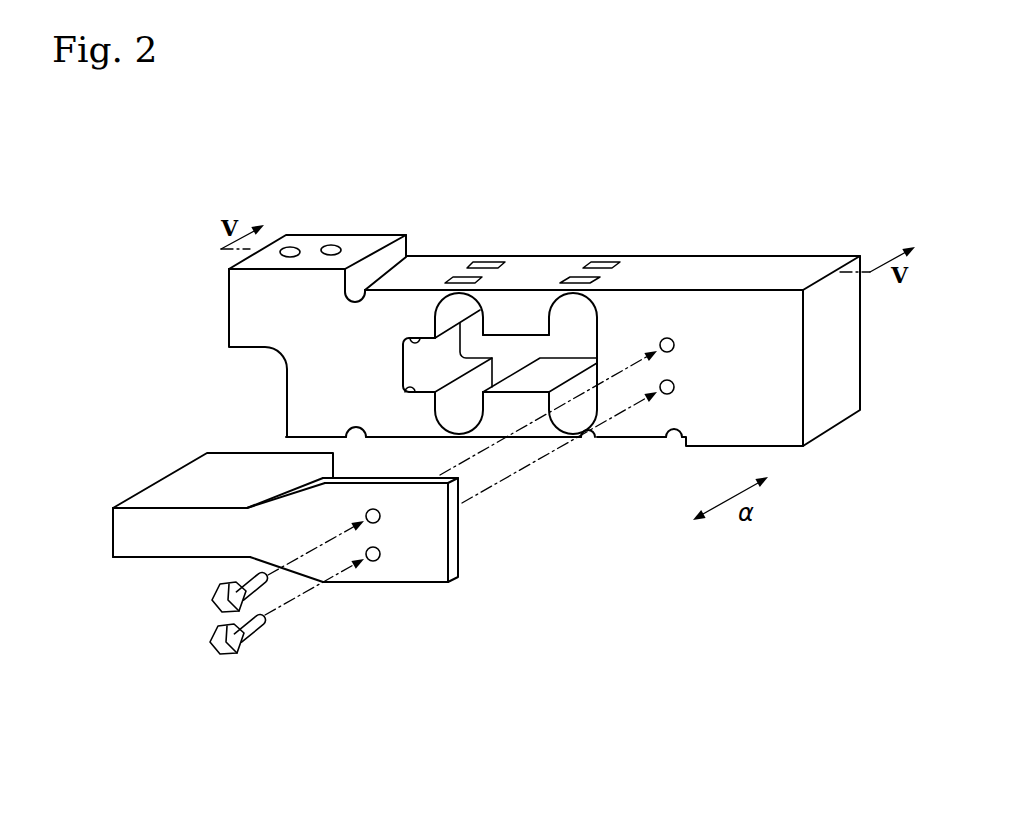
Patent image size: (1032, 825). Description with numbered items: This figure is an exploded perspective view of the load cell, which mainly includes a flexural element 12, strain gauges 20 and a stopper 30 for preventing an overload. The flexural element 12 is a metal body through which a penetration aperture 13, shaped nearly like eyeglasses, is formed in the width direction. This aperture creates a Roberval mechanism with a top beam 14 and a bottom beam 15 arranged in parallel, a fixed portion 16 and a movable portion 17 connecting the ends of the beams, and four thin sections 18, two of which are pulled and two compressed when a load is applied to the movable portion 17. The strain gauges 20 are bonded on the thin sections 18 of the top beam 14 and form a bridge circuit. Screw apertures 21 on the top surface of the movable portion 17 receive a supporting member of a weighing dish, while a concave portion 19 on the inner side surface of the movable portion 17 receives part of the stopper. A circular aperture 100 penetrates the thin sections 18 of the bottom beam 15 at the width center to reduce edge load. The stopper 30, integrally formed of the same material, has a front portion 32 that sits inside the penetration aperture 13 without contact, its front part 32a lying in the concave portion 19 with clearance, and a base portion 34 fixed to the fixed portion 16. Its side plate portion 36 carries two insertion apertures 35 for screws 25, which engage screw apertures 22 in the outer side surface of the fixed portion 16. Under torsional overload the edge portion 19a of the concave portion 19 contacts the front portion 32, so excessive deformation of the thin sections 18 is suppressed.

The flexural element 12 is at (212, 313).
The penetration aperture 13 is at (567, 347).
The top beam 14 is at (527, 313).
The bottom beam 15 is at (517, 412).
The fixed portion 16 is at (775, 347).
The movable portion 17 is at (343, 343).
The thin sections 18 is at (458, 293).
The concave portion 19 is at (412, 364).
The edge portion 19a is at (413, 338).
The strain gauges 20 is at (478, 278).
The screw apertures 21 is at (334, 246).
The screw apertures 22 is at (664, 394).
The screws 25 is at (209, 641).
The stopper 30 is at (155, 458).
The front portion 32 is at (226, 488).
The front part 32a is at (113, 530).
The base portion 34 is at (420, 570).
The insertion apertures 35 is at (374, 561).
The side plate portion 36 is at (489, 563).
The circular aperture 100 is at (477, 417).